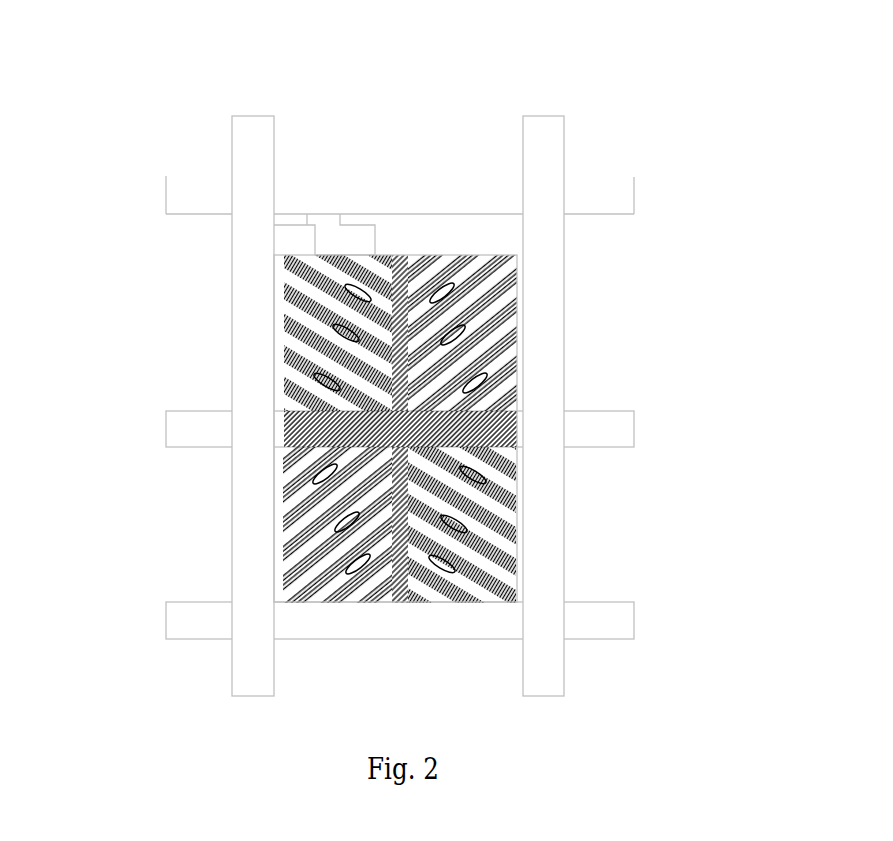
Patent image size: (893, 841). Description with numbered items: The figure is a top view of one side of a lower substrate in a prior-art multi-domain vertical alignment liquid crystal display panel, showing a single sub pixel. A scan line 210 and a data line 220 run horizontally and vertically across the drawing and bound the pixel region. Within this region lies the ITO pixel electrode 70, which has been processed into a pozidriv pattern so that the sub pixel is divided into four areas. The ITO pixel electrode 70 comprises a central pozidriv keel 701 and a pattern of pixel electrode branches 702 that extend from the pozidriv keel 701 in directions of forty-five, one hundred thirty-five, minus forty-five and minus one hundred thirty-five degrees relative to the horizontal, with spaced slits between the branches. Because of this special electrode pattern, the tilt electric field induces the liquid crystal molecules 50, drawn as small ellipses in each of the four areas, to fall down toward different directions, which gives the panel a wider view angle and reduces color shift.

The scan line 210 is at (183, 198).
The data line 220 is at (247, 145).
The liquid crystal molecules 50 is at (444, 290).
The ITO pixel electrode 70 is at (537, 429).
The pozidriv keel 701 is at (407, 352).
The pixel electrode branches 702 is at (517, 503).